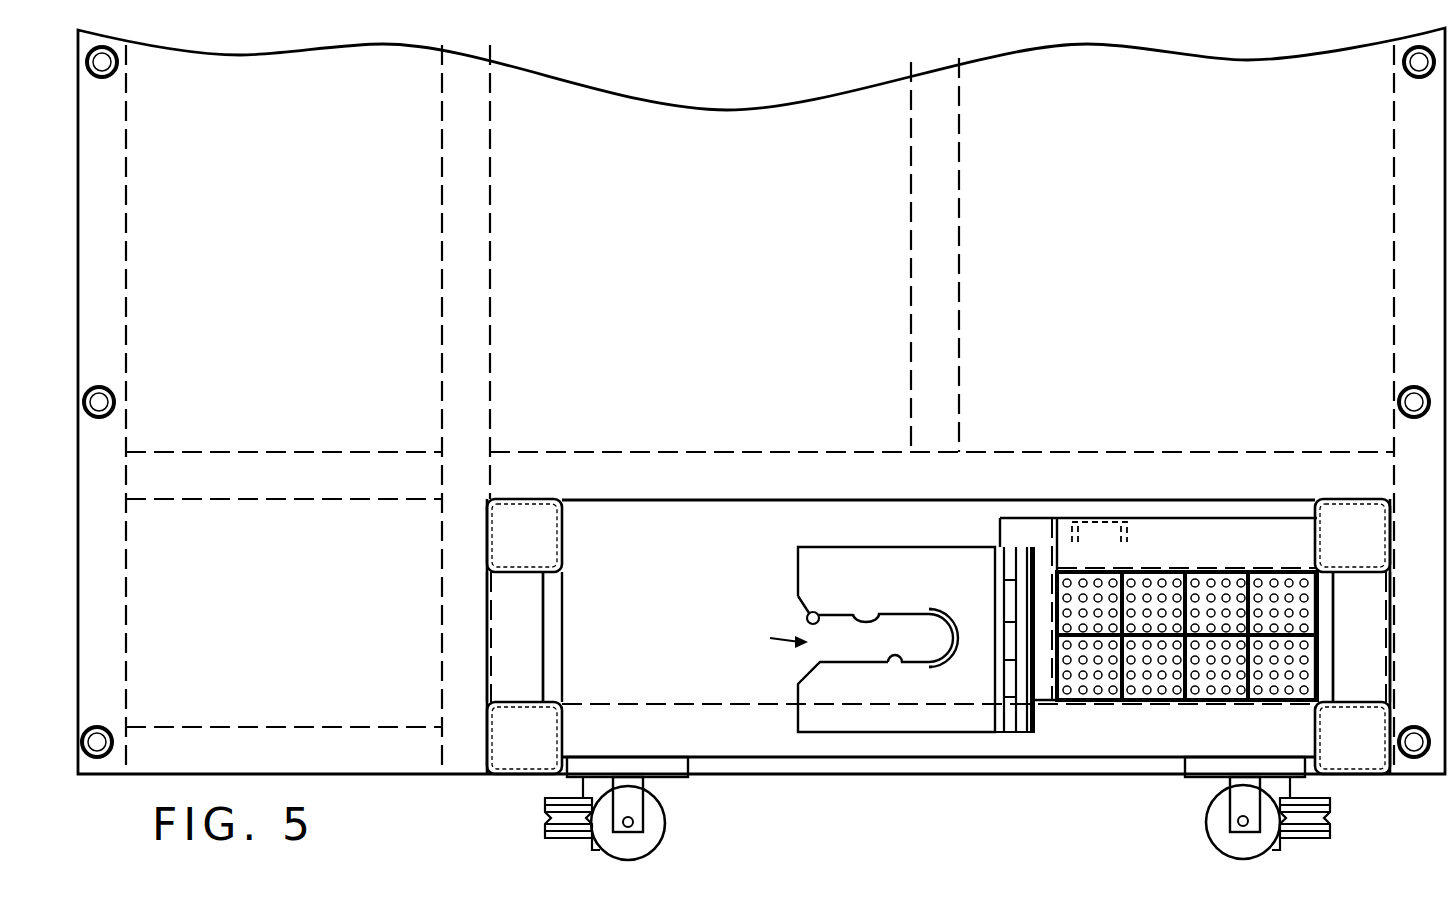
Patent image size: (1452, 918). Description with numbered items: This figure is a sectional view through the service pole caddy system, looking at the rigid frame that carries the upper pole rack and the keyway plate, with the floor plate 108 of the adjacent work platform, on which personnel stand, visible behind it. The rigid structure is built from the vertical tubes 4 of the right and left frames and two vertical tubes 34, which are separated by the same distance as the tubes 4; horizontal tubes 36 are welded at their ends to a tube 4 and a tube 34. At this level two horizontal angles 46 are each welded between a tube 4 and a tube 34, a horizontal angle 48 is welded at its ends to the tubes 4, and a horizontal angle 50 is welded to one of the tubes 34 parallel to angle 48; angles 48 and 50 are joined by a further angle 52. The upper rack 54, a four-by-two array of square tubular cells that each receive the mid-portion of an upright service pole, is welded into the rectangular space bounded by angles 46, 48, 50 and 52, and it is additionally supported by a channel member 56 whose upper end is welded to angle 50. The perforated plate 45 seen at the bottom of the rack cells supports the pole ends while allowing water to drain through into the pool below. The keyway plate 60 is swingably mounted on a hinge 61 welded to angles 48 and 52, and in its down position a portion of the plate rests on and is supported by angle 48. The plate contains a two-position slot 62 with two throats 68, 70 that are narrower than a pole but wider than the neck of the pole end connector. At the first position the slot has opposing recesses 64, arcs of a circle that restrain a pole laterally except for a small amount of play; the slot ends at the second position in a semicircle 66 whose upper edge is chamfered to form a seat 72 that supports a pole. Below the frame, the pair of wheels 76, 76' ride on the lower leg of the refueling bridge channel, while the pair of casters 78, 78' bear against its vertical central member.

The floor plate 108 is at (675, 225).
The vertical tube 4 is at (491, 777).
The vertical tube 34 is at (565, 528).
The horizontal tube 36 is at (553, 645).
The horizontal angle 46 is at (503, 632).
The horizontal angle 48 is at (713, 752).
The horizontal angle 50 is at (1168, 560).
The angle 52 is at (1008, 534).
The upper rack 54 is at (1128, 712).
The perforated plate 45 is at (1217, 683).
The channel member 56 is at (1128, 520).
The keyway plate 60 is at (797, 562).
The hinge 61 is at (1006, 737).
The two-position slot 62 is at (770, 638).
The opposing recesses 64 is at (879, 613).
The semicircle 66 is at (950, 655).
The throat 68 is at (893, 665).
The throat 70 is at (814, 611).
The seat 72 is at (932, 610).
The wheel 76 is at (1338, 819).
The wheel 76' is at (529, 820).
The caster 78 is at (1203, 818).
The caster 78' is at (671, 818).